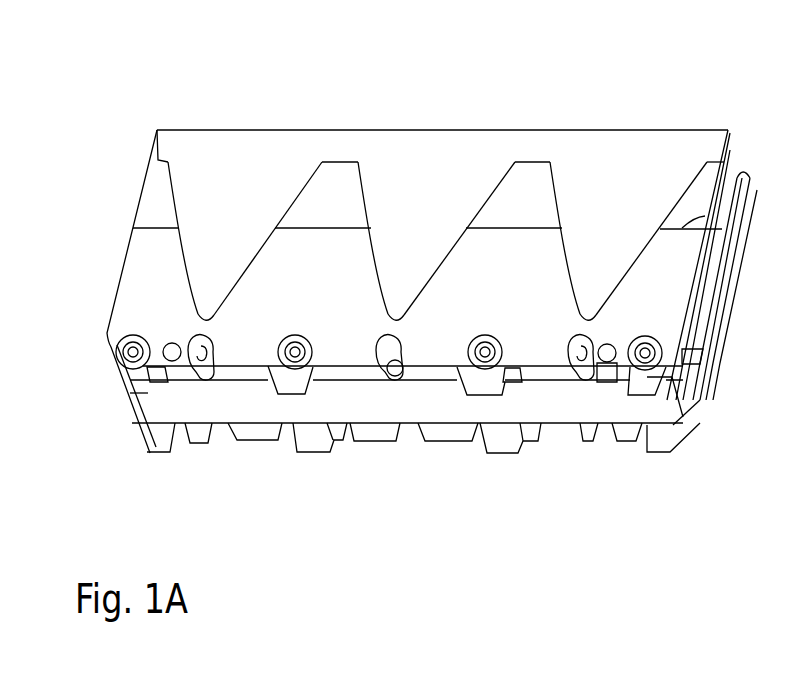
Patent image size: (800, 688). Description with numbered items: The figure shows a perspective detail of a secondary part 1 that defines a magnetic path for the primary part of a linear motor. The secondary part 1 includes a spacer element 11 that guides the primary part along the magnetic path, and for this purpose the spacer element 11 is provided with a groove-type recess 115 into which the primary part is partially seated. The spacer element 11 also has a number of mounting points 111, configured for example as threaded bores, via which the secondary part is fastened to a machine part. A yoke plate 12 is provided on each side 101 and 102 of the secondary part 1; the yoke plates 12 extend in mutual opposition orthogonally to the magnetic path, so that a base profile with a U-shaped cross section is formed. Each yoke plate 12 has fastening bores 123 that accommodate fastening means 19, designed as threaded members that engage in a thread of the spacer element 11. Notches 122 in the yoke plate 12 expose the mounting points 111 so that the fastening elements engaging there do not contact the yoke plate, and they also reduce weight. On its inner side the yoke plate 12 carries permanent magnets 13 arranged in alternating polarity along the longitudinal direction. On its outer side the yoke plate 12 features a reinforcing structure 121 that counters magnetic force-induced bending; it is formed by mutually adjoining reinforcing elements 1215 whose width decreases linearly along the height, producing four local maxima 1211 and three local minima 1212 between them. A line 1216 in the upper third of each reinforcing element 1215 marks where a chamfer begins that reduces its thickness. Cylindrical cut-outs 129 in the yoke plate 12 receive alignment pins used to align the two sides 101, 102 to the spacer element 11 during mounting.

The saw blade assembly 1 is at (770, 84).
The side 101 is at (735, 429).
The side 102 is at (109, 251).
The spacer element 11 is at (443, 426).
The mounting points 111 is at (199, 388).
The groove-type recess 115 is at (692, 377).
The yoke plate 12 is at (452, 265).
The reinforcing structure 121 is at (448, 154).
The local maxima 1211 is at (159, 160).
The local minima 1212 is at (207, 316).
The reinforcing elements 1215 is at (427, 247).
The line 1216 is at (172, 226).
The notches 122 is at (209, 340).
The fastening bores 123 is at (140, 336).
The cylindrical cut-outs 129 is at (156, 452).
The permanent magnets 13 is at (740, 190).
The fastening means 19 is at (122, 362).